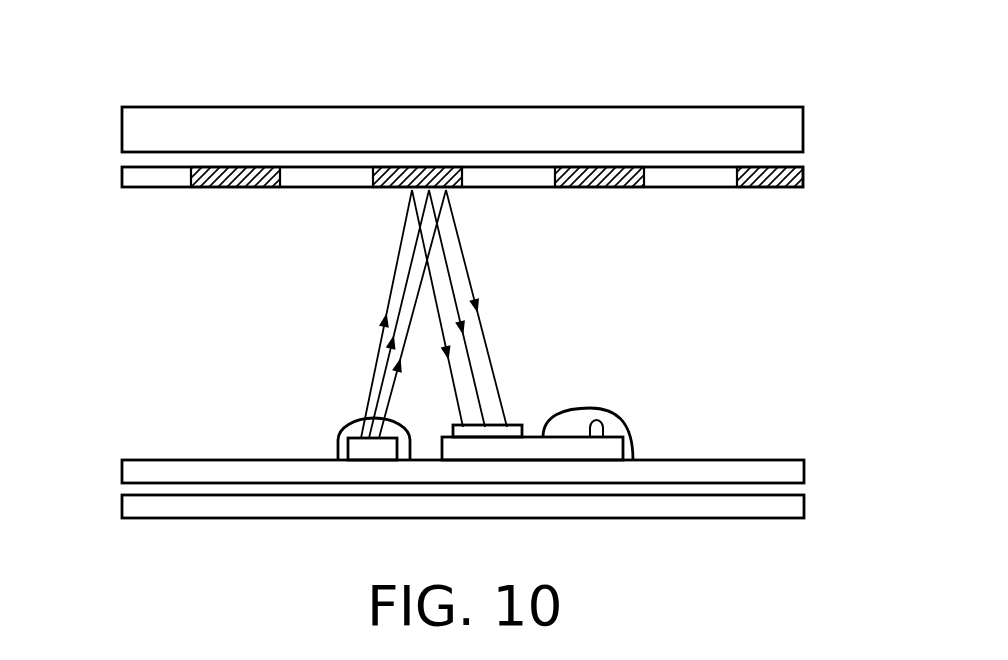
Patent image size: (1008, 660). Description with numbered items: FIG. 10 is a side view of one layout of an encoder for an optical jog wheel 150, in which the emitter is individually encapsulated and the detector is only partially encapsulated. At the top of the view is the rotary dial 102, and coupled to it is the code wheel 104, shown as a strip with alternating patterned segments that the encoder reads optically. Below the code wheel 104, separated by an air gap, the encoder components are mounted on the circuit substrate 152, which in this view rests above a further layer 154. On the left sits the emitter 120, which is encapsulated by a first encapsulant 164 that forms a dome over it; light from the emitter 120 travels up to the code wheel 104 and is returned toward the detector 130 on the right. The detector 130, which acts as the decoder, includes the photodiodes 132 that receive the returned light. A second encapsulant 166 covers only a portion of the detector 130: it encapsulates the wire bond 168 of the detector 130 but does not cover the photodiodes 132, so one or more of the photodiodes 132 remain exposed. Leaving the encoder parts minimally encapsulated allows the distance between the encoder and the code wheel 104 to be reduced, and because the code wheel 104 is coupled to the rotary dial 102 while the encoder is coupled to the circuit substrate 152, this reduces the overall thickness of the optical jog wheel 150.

The optical jog wheel 150 is at (188, 72).
The rotary dial 102 is at (695, 120).
The code wheel 104 is at (695, 183).
The first encapsulant 164 is at (352, 430).
The emitter 120 is at (362, 448).
The photodiodes 132 is at (513, 430).
The detector 130 is at (612, 448).
The second encapsulant 166 is at (578, 420).
The wire bond 168 is at (605, 427).
The circuit substrate 152 is at (770, 470).
The backing layer 154 is at (795, 505).